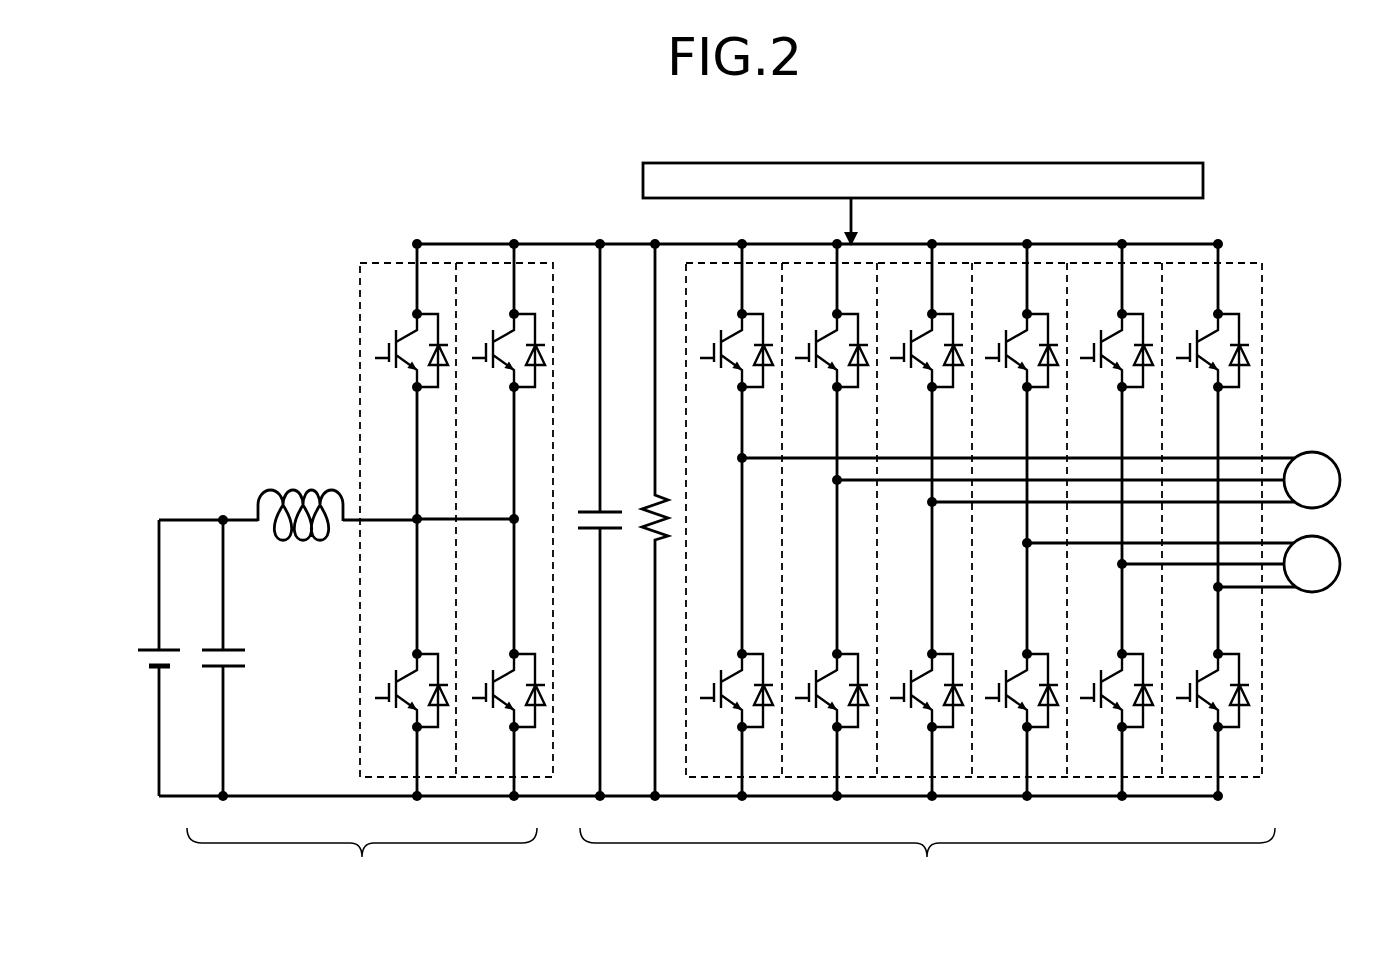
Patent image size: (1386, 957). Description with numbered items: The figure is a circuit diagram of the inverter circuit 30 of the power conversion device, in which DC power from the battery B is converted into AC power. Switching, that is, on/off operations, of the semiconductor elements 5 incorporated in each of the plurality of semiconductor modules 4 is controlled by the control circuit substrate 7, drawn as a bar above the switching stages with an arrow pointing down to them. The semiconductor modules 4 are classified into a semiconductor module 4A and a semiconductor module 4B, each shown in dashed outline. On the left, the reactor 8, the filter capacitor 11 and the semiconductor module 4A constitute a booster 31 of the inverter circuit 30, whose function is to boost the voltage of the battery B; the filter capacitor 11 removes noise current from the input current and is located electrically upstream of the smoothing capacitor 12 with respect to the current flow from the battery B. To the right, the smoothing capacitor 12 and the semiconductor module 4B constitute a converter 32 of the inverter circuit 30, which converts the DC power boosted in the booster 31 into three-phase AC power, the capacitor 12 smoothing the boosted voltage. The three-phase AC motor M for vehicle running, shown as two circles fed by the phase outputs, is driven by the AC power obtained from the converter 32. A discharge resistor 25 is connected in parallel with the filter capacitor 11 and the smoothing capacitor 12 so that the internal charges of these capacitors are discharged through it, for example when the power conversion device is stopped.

The semiconductor module 4 is at (828, 456).
The semiconductor module 4A is at (485, 275).
The semiconductor module 4B is at (908, 277).
The semiconductor element 5 is at (386, 318).
The control circuit substrate 7 is at (945, 175).
The reactor 8 is at (296, 481).
The filter capacitor 11 is at (214, 645).
The smoothing capacitor 12 is at (590, 538).
The discharge resistor 25 is at (645, 494).
The inverter circuit 30 is at (1262, 181).
The booster 31 is at (362, 860).
The converter 32 is at (927, 860).
The battery B is at (150, 648).
The three-phase AC motor M is at (1312, 462).